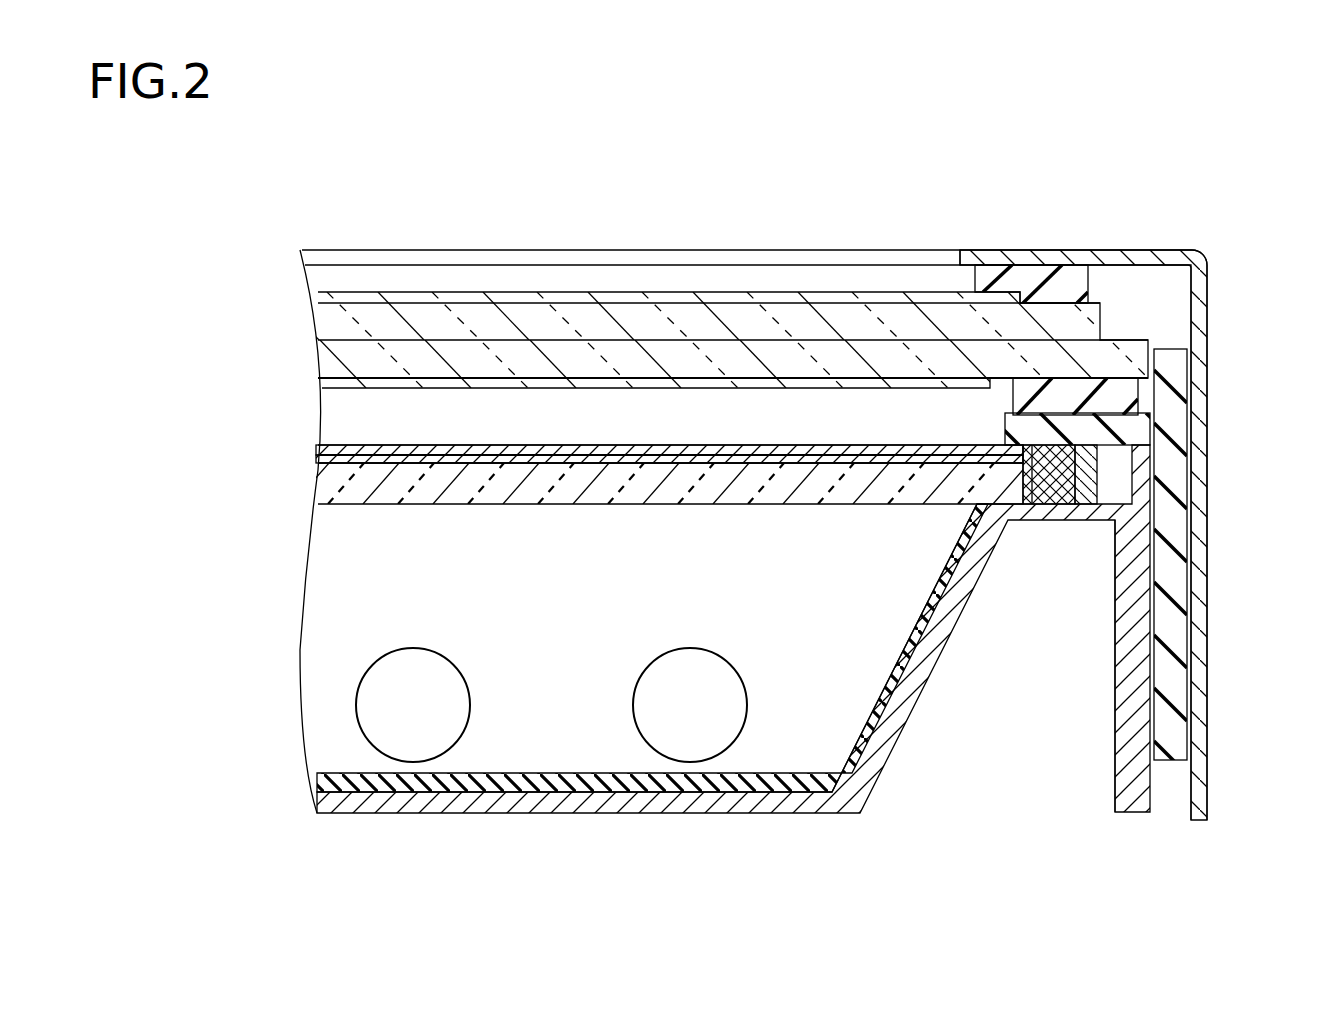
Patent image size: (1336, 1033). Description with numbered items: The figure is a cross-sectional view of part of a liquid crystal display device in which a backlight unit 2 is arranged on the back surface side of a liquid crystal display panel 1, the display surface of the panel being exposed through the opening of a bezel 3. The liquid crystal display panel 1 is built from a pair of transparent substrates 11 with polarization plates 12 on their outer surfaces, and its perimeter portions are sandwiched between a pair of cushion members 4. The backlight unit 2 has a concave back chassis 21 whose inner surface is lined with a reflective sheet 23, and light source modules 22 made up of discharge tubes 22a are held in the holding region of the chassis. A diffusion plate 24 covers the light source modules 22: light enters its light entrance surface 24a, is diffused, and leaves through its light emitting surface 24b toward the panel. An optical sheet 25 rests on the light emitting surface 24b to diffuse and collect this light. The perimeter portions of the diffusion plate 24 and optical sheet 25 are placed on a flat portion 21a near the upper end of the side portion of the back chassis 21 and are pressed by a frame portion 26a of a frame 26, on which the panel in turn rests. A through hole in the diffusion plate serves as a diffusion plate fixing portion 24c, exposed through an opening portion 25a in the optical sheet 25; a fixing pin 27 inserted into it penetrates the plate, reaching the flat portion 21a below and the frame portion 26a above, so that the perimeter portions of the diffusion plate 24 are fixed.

The liquid crystal display panel 1 is at (203, 268).
The backlight unit 2 is at (203, 425).
The bezel 3 is at (1196, 263).
The cushion member 4 is at (1020, 277).
The transparent substrate 11 is at (318, 321).
The polarization plate 12 is at (318, 297).
The back chassis 21 is at (317, 802).
The flat portion 21a is at (1087, 513).
The light source module 22 is at (340, 690).
The discharge tube 22a is at (414, 672).
The reflective sheet 23 is at (317, 782).
The diffusion plate 24 is at (320, 483).
The light entrance surface 24a is at (503, 504).
The light emitting surface 24b is at (633, 465).
The diffusion plate fixing portion 24c is at (1060, 495).
The optical sheet 25 is at (320, 449).
The opening portion 25a is at (1042, 455).
The frame 26 is at (1170, 417).
The frame portion 26a is at (1100, 435).
The fixing pin 27 is at (1037, 506).